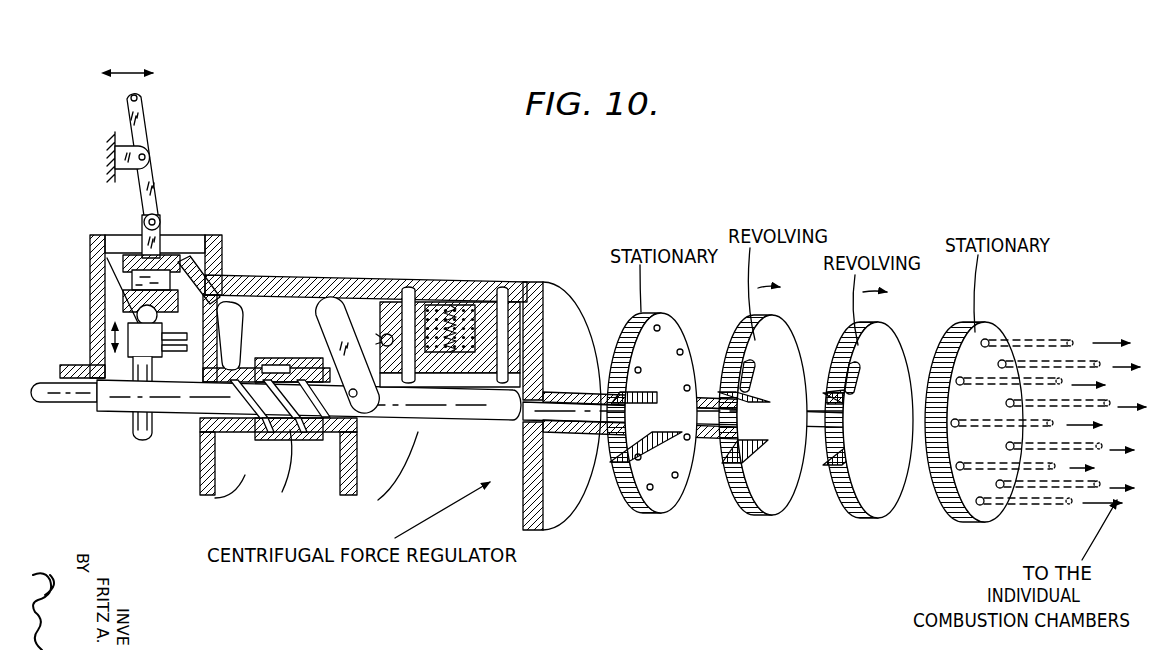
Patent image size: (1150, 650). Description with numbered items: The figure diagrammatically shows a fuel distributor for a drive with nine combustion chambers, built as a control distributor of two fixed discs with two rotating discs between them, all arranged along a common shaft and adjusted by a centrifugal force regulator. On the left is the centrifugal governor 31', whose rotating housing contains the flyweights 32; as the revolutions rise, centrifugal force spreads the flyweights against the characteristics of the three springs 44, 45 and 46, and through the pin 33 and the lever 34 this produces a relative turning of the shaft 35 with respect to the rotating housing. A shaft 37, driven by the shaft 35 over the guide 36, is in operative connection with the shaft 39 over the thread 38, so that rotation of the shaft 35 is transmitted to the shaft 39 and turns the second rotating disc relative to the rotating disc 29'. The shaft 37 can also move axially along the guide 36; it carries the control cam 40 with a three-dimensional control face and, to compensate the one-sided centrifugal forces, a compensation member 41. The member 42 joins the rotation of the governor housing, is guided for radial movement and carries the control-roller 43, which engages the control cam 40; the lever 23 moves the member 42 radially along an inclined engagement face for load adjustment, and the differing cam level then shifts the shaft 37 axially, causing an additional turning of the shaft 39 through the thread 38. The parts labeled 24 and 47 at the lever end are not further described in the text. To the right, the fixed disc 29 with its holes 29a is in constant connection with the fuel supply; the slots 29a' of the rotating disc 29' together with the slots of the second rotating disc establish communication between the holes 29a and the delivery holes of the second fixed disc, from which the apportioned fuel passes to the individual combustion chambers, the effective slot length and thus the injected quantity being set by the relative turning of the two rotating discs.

The lever 23 is at (140, 108).
The actuating rod 24 is at (142, 233).
The slide block 47 is at (158, 273).
The control cam 40 is at (225, 290).
The member 42 is at (135, 348).
The control-roller 43 is at (183, 346).
The compensation member 41 is at (222, 492).
The flyweights 32 is at (479, 374).
The shaft 35 is at (305, 367).
The guide 36 is at (270, 365).
The shaft 37 is at (241, 350).
The thread 38 is at (293, 420).
The shaft 39 is at (272, 422).
The lever 34 is at (367, 338).
The pin 33 is at (389, 334).
The spring 44 is at (430, 298).
The spring 45 is at (461, 298).
The spring 46 is at (452, 352).
The centrifugal governor 31' is at (581, 402).
The fixed disc 29 is at (662, 433).
The holes 29a is at (676, 430).
The rotating disc 29' is at (753, 429).
The slots 29a' is at (727, 349).